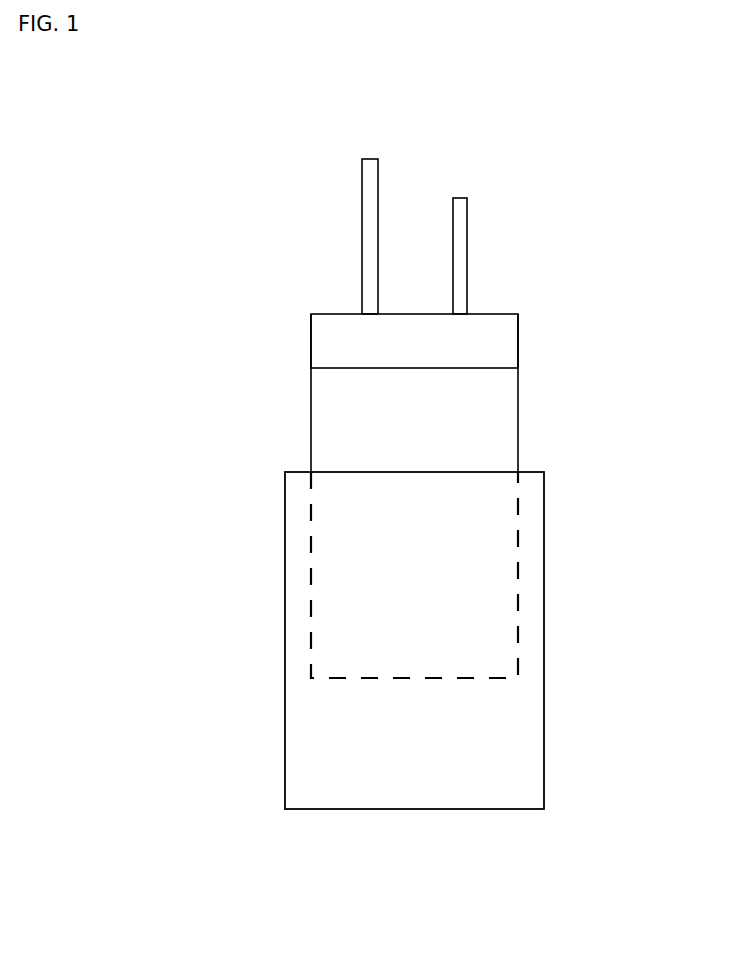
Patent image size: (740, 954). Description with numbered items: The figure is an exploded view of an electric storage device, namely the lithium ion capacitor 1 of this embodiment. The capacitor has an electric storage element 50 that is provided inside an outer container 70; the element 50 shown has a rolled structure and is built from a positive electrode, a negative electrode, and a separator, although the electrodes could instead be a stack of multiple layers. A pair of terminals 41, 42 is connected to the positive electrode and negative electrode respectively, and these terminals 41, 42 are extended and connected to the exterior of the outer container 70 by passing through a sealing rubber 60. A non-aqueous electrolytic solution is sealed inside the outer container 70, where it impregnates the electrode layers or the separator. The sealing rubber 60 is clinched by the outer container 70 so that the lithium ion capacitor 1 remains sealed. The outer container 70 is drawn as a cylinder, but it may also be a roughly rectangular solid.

The lithium ion capacitor 1 is at (545, 198).
The terminal 41 is at (362, 250).
The terminal 42 is at (467, 250).
The electric storage element 50 is at (325, 418).
The sealing rubber 60 is at (505, 342).
The outer container 70 is at (298, 743).